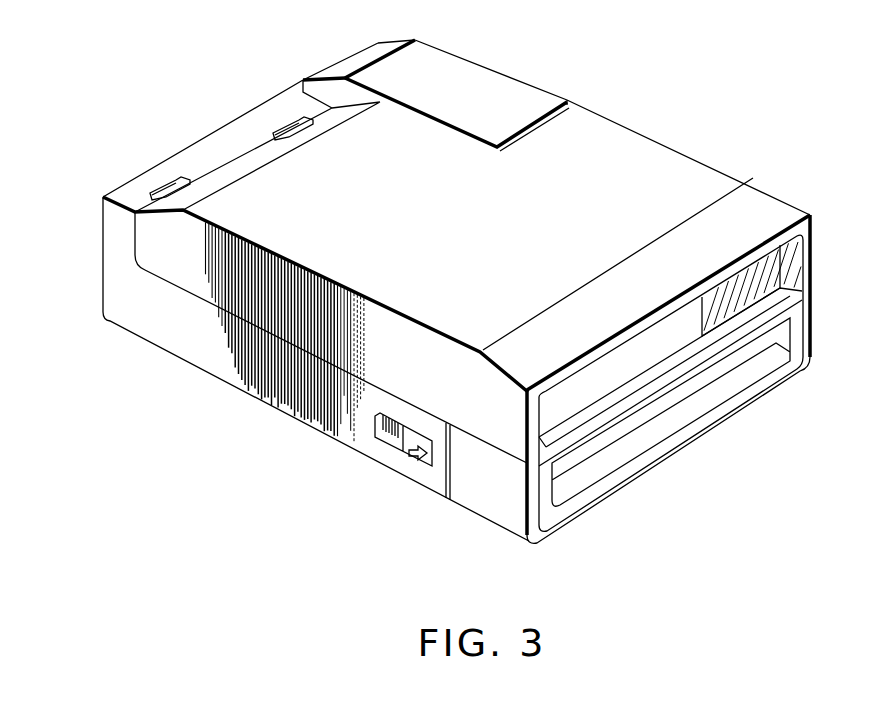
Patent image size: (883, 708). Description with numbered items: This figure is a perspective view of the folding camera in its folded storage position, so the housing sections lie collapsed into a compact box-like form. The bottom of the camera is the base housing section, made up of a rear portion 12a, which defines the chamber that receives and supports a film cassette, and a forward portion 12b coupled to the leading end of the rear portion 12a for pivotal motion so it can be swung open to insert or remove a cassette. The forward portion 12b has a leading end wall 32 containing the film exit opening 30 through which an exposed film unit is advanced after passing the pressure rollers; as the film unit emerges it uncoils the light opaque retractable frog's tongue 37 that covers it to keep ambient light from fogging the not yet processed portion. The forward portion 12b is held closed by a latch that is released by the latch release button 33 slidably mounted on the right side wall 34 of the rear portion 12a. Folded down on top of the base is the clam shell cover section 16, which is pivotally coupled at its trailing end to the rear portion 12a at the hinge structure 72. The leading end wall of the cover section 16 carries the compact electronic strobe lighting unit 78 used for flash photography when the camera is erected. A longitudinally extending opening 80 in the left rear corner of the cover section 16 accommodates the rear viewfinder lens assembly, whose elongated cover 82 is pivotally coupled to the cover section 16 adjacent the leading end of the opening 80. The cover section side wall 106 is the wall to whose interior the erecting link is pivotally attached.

The rear portion 12a is at (175, 363).
The forward portion 12b is at (477, 517).
The cover section 16 is at (757, 172).
The film exit opening 30 is at (583, 480).
The leading end wall 32 is at (550, 518).
The latch release button 33 is at (412, 461).
The right side wall 34 is at (292, 390).
The frog's tongue 37 is at (710, 385).
The hinge structure 72 is at (166, 188).
The electronic strobe lighting unit 78 is at (766, 264).
The opening 80 is at (556, 112).
The cover 82 is at (489, 95).
The cover section side wall 106 is at (397, 362).